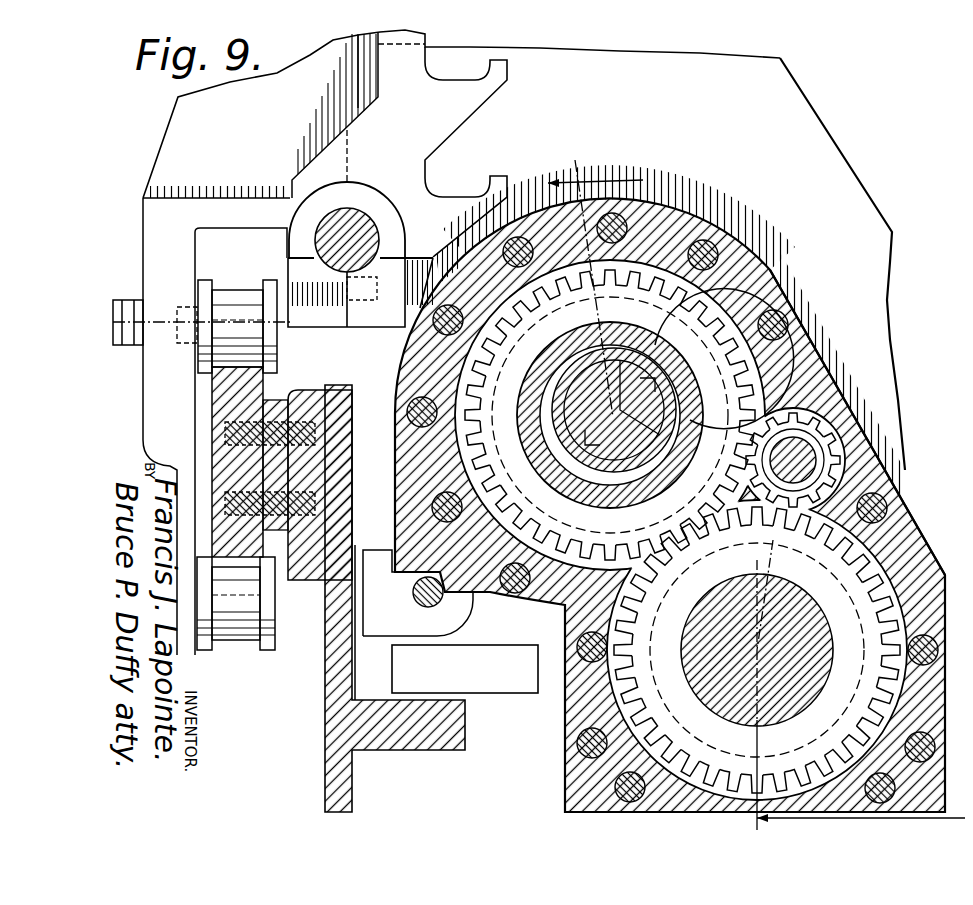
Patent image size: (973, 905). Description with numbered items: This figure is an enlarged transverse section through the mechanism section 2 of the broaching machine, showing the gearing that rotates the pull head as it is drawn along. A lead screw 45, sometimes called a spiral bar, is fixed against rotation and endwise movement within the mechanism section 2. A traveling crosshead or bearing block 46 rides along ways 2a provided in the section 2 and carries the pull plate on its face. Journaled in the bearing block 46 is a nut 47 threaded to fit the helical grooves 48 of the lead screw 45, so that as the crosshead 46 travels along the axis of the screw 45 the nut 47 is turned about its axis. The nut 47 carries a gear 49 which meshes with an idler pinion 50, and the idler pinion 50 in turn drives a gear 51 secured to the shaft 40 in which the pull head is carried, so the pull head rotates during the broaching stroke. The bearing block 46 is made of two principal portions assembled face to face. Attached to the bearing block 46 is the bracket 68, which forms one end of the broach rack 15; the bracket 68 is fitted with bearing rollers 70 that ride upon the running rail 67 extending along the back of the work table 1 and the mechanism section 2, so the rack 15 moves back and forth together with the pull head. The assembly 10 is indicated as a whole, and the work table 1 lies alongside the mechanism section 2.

The work table 1 is at (863, 816).
The mechanism section 2 is at (326, 770).
The ways 2a is at (513, 680).
The drive assembly 10 is at (595, 288).
The rack 15 is at (350, 220).
The shaft 40 is at (808, 592).
The lead screw 45 is at (653, 372).
The bearing block 46 is at (800, 345).
The nut 47 is at (650, 472).
The helical grooves 48 is at (655, 455).
The gear 49 is at (748, 380).
The idler pinion 50 is at (840, 458).
The gear 51 is at (930, 553).
The running rail 67 is at (260, 390).
The bracket 68 is at (805, 113).
The bearing rollers 70 is at (236, 298).